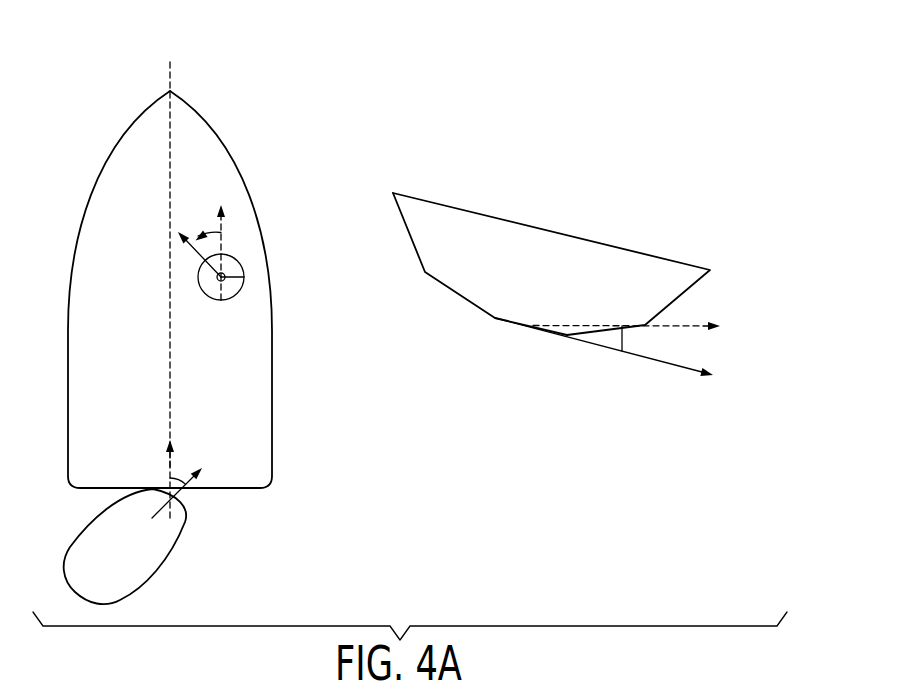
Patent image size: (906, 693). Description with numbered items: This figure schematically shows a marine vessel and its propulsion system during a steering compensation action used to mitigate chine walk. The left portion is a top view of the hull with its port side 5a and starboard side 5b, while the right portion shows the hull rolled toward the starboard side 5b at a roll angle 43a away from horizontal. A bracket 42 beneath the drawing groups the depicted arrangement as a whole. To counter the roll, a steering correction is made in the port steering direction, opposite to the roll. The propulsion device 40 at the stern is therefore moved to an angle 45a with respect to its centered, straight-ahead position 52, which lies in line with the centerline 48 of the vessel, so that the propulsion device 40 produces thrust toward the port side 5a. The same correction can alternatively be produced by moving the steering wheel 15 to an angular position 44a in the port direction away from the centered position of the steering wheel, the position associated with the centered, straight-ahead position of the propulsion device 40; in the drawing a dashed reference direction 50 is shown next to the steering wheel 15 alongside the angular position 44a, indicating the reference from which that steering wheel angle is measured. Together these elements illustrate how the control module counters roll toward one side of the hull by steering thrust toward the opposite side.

The port side 5a is at (103, 157).
The starboard side 5b is at (237, 157).
The steering wheel 15 is at (236, 295).
The propulsion device 40 is at (73, 543).
The marine vessel 42 is at (410, 652).
The roll angle 43a is at (625, 338).
The angular position of steering wheel 44a is at (215, 233).
The angle of propulsion device 45a is at (179, 472).
The centerline 48 is at (170, 82).
The reference heading direction 50 is at (222, 232).
The centered, straight-ahead position 52 is at (168, 467).